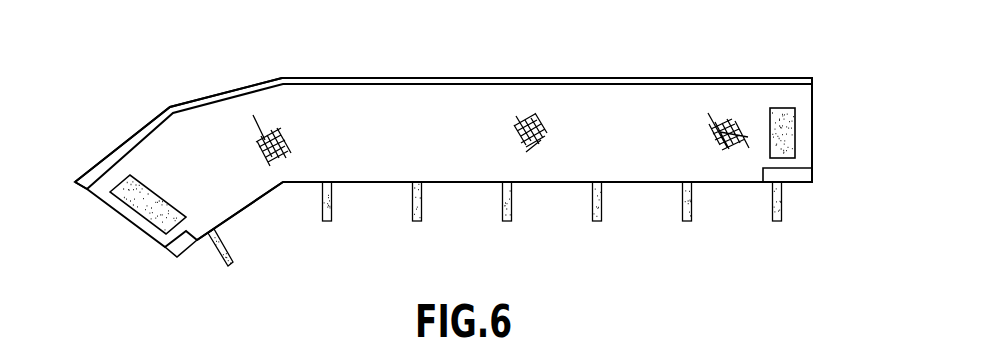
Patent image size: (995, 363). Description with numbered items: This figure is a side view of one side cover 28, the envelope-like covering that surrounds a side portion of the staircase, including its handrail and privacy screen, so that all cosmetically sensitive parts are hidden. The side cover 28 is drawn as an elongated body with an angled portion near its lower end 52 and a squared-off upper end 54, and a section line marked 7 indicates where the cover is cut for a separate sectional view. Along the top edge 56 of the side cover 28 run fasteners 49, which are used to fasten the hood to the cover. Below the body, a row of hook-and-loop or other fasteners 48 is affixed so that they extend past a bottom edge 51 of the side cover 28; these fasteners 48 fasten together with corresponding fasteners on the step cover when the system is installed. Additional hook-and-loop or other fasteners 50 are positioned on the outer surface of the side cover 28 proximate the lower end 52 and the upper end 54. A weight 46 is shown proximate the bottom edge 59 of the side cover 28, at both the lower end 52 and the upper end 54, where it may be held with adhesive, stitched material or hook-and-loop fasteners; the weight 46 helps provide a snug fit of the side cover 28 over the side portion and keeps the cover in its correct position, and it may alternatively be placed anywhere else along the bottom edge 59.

The side cover 28 is at (481, 50).
The weight 46 is at (180, 248).
The fasteners 48 is at (600, 222).
The fasteners 49 is at (193, 106).
The fasteners 50 is at (143, 207).
The bottom edge 51 is at (362, 182).
The lower end 52 is at (92, 188).
The upper end 54 is at (802, 100).
The top edge 56 is at (332, 80).
The bottom edge 59 is at (247, 207).
The section line 7- 7 is at (633, 32).